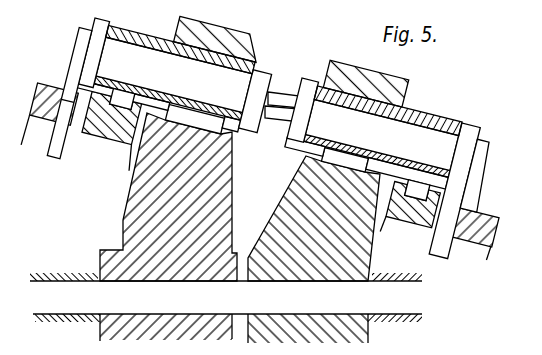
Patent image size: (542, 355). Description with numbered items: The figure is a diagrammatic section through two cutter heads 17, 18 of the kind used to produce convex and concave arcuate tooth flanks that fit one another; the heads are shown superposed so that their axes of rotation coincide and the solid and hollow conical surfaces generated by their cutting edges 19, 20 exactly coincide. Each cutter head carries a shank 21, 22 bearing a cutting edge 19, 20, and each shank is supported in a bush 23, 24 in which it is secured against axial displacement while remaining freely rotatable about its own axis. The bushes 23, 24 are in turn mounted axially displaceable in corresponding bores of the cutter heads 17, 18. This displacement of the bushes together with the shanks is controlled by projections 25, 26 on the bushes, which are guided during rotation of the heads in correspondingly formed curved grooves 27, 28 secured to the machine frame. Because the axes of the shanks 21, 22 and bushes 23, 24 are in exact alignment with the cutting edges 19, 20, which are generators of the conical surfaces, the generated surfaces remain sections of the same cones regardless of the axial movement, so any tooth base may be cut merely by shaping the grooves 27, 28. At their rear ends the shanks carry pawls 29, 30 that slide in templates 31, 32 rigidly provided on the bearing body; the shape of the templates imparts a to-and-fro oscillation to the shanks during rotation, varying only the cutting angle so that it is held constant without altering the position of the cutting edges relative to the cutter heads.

The cutter head 17 is at (168, 223).
The cutter head 18 is at (314, 245).
The cutting edge 19 is at (282, 114).
The cutting edge 20 is at (284, 100).
The shank 21 is at (175, 77).
The shank 22 is at (374, 168).
The bush 23 is at (184, 37).
The bush 24 is at (391, 97).
The projection 25 is at (122, 99).
The projection 26 is at (417, 190).
The groove 27 is at (111, 130).
The groove 28 is at (410, 212).
The pawl 29 is at (69, 92).
The pawl 30 is at (477, 175).
The template 31 is at (49, 119).
The template 32 is at (469, 233).